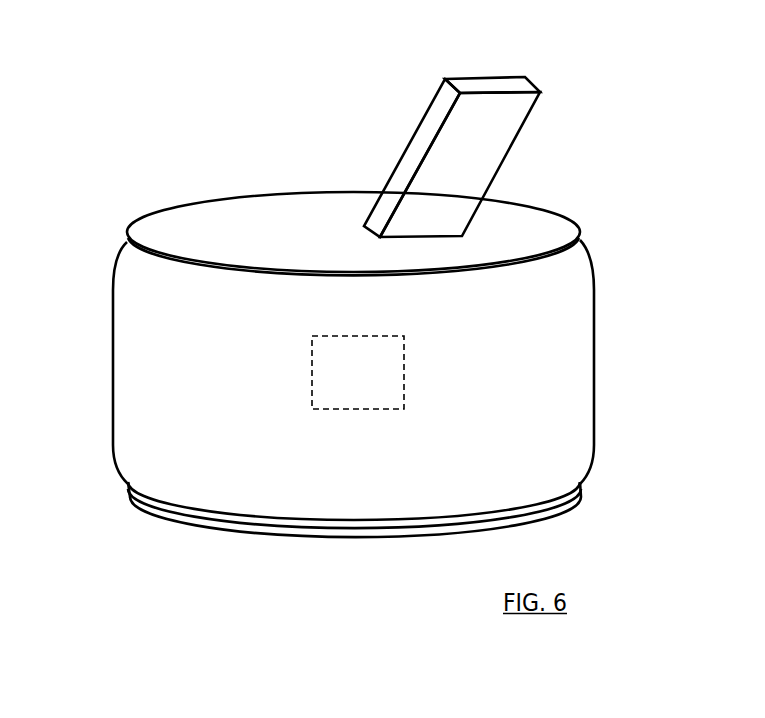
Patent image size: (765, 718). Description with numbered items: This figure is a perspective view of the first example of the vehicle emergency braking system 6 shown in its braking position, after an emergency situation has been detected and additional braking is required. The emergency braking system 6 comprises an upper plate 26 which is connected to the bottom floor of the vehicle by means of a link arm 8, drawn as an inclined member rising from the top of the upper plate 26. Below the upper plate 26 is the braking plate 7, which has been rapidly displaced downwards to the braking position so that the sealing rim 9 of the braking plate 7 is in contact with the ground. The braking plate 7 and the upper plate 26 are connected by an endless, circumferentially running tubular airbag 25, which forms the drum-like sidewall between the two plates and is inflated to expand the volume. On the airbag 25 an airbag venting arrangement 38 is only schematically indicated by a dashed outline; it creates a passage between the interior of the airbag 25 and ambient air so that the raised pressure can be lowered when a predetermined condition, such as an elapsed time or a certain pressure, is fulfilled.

The emergency braking system 6 is at (217, 162).
The braking plate 7 is at (173, 505).
The link arm 8 is at (467, 152).
The sealing rim 9 is at (223, 523).
The tubular airbag 25 is at (552, 347).
The upper plate 26 is at (329, 217).
The airbag venting arrangement 38 is at (373, 370).